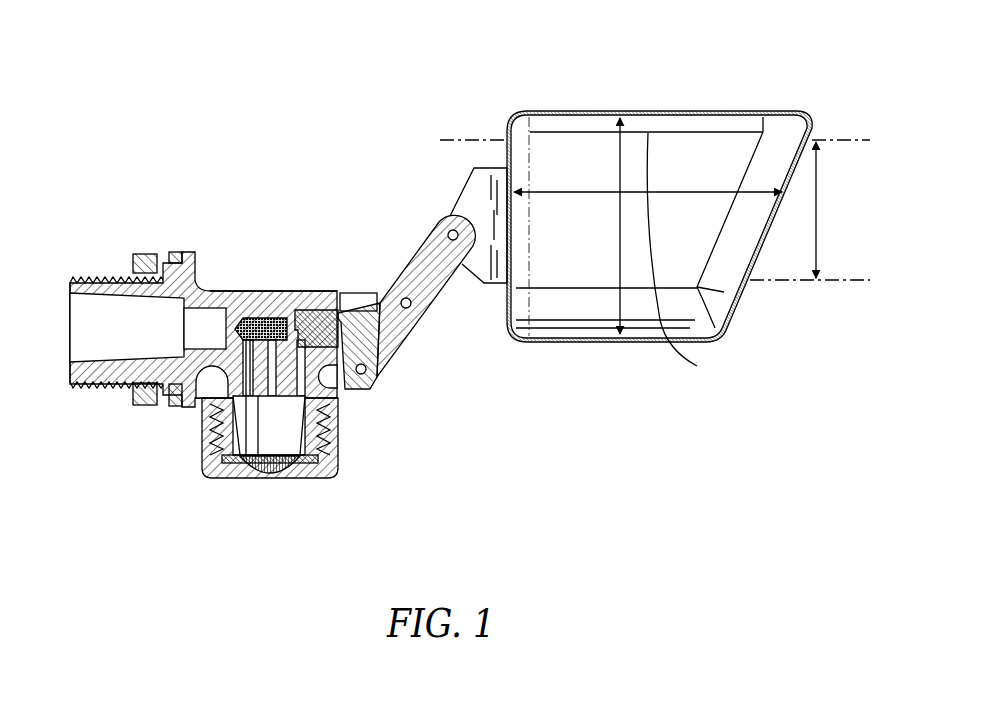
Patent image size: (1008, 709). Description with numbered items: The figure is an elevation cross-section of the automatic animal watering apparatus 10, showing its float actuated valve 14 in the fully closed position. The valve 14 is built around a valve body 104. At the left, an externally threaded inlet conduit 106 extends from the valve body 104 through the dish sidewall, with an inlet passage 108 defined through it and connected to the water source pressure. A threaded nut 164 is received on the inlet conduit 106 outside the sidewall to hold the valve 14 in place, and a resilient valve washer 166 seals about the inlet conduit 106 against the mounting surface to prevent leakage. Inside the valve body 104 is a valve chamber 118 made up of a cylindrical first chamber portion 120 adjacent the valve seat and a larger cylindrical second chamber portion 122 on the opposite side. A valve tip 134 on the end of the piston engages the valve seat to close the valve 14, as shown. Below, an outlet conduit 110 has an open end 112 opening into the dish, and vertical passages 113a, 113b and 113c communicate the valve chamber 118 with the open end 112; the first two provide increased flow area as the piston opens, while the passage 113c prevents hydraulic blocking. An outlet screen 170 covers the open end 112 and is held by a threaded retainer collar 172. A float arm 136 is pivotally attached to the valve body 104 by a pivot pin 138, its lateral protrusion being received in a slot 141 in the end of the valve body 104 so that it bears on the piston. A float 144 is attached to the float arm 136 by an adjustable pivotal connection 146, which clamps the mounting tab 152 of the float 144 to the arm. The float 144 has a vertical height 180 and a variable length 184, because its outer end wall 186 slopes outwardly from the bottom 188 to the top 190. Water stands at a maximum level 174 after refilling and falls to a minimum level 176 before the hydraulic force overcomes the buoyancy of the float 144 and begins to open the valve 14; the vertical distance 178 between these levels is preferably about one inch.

The automatic animal watering apparatus 10 is at (454, 295).
The valve 14 is at (211, 299).
The valve body 104 is at (257, 288).
The inlet conduit 106 is at (112, 276).
The inlet passage 108 is at (72, 300).
The outlet conduit 110 is at (338, 393).
The open end 112 is at (283, 465).
The vertical passage 113a is at (242, 455).
The vertical passage 113b is at (258, 455).
The vertical passage 113c is at (300, 455).
The valve chamber 118 is at (317, 284).
The first chamber portion 120 is at (272, 318).
The second chamber portion 122 is at (301, 309).
The valve tip 134 is at (252, 289).
The float arm 136 is at (400, 332).
The pivot pin 138 is at (380, 378).
The slot 141 is at (397, 362).
The adjustable pivotal connection 146 is at (447, 233).
The mounting tab 152 is at (478, 258).
The threaded nut 164 is at (140, 407).
The valve washer 166 is at (175, 407).
The outlet screen 170 is at (272, 465).
The threaded retainer collar 172 is at (327, 432).
The maximum water level 174 is at (480, 138).
The minimum water level 176 is at (807, 282).
The vertical distance 178 is at (817, 192).
The vertical height 180 is at (622, 152).
The variable length 184 is at (689, 257).
The outer end wall 186 is at (740, 298).
The bottom 188 is at (570, 343).
The top 190 is at (558, 112).
The float 144 is at (676, 265).